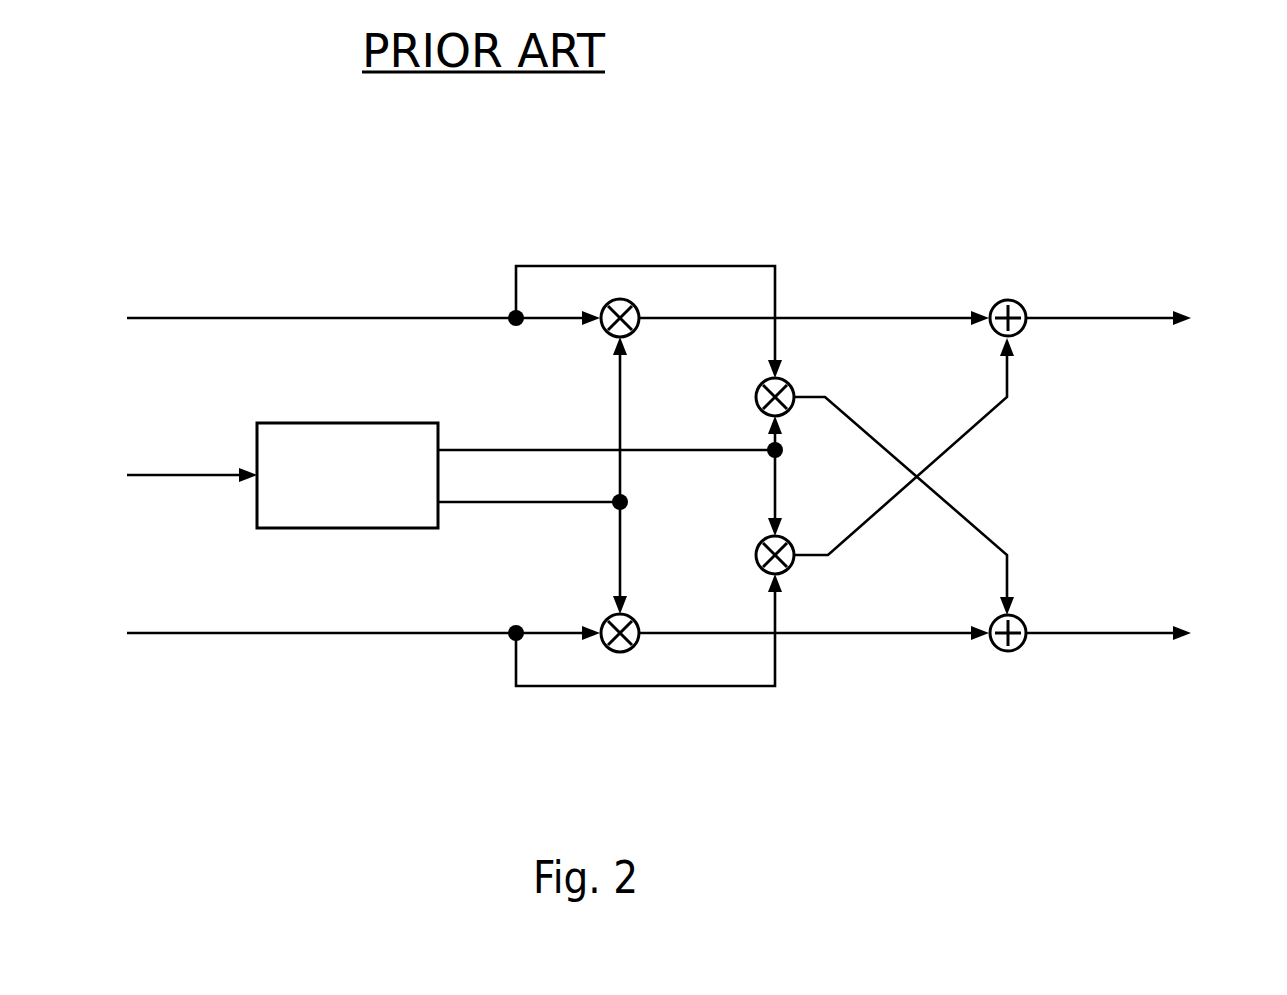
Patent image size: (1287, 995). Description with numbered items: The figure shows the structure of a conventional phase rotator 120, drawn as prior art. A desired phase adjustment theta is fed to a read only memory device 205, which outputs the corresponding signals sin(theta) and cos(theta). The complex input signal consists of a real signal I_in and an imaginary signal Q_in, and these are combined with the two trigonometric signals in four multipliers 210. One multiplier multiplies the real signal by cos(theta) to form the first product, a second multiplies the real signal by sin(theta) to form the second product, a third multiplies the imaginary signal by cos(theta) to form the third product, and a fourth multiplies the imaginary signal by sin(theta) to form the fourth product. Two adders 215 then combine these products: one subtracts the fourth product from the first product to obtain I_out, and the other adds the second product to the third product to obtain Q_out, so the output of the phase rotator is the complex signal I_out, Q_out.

The rotator / phase rotation circuit (prior art) 120 is at (898, 174).
The ROM device 205 is at (312, 528).
The multipliers 210 is at (653, 475).
The adders 215 is at (963, 475).